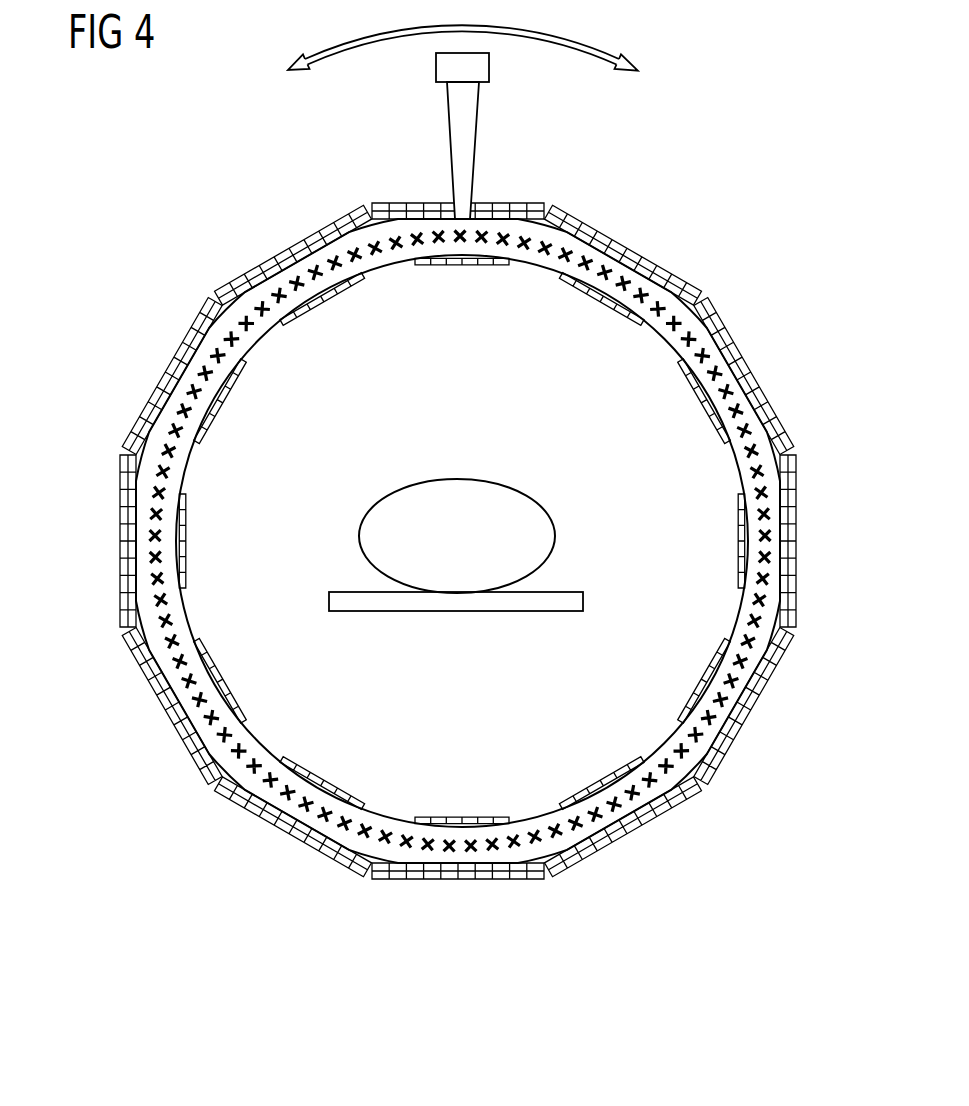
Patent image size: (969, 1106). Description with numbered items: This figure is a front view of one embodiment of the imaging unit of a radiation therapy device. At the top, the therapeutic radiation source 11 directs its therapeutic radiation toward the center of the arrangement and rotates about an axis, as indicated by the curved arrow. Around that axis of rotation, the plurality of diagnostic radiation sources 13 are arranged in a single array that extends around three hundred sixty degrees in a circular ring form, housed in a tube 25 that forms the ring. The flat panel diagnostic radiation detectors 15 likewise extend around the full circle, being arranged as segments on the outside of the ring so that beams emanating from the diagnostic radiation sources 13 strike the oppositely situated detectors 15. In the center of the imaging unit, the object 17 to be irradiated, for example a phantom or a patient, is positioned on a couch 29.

The therapeutic radiation source 11 is at (488, 117).
The diagnostic radiation sources 13 is at (662, 300).
The diagnostic radiation detectors 15 is at (256, 270).
The object 17 is at (492, 480).
The tube 25 is at (403, 223).
The couch 29 is at (565, 592).